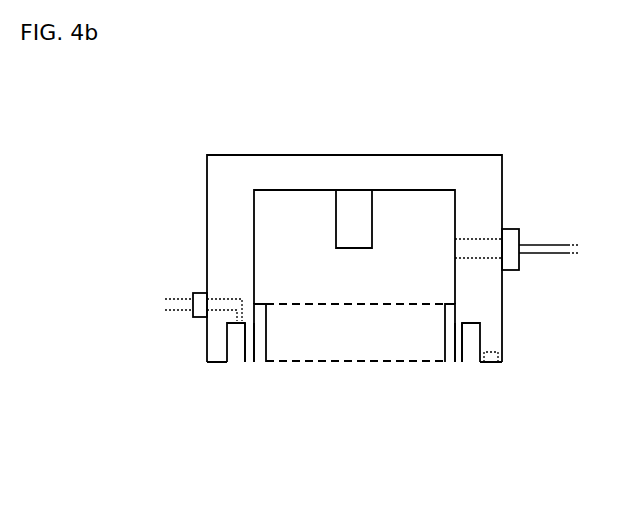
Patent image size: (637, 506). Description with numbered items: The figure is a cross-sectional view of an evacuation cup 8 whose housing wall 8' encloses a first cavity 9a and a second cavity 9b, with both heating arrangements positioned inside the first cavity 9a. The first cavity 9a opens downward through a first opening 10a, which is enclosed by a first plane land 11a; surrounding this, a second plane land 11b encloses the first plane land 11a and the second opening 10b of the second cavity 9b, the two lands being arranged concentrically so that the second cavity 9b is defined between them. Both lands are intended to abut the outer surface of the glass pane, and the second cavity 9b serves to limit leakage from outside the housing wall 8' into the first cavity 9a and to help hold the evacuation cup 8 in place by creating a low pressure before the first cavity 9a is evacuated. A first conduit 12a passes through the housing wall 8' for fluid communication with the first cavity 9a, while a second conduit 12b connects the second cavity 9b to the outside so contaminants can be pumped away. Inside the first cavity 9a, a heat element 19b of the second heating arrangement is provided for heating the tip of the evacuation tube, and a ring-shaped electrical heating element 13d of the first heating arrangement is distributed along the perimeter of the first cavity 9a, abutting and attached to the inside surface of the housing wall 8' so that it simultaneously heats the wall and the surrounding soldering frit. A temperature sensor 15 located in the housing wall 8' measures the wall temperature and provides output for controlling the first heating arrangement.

The evacuation cup 8 is at (354, 213).
The housing wall 8' is at (352, 142).
The first cavity 9a is at (291, 287).
The second cavity 9b is at (237, 347).
The heat element 19b is at (355, 233).
The first conduit 12a is at (480, 247).
The second conduit 12b is at (230, 305).
The first plane land 11a is at (250, 365).
The second plane land 11b is at (218, 363).
The first opening 10a is at (350, 362).
The second opening 10b is at (238, 363).
The ring-shaped electrical heating element 13d is at (367, 347).
The temperature sensor 15 is at (491, 351).